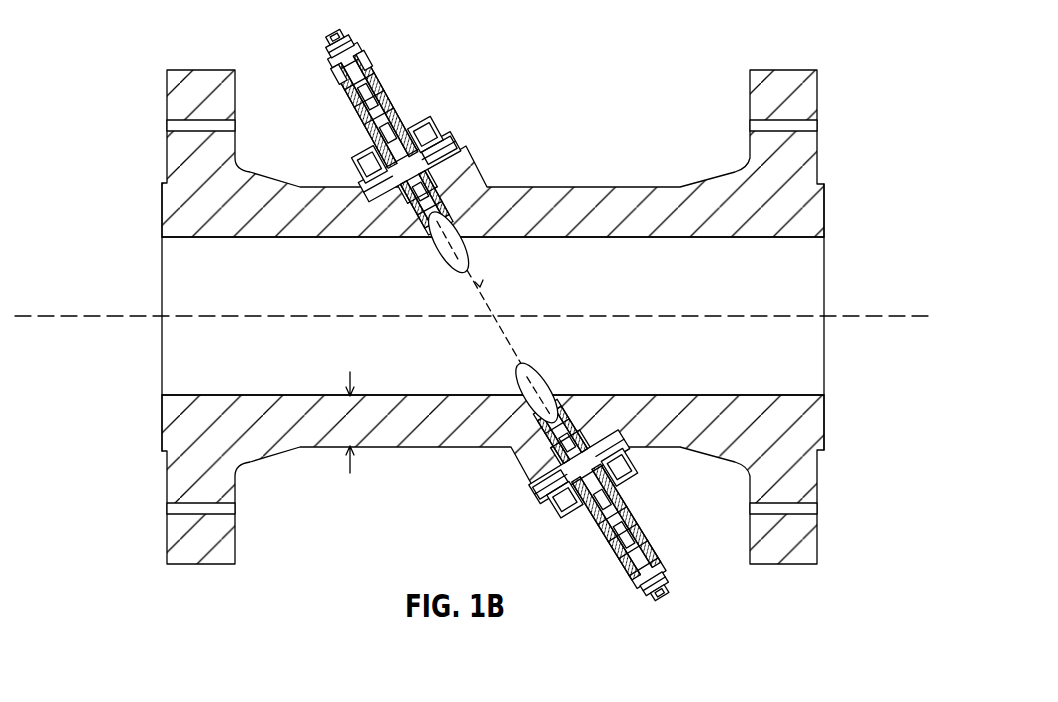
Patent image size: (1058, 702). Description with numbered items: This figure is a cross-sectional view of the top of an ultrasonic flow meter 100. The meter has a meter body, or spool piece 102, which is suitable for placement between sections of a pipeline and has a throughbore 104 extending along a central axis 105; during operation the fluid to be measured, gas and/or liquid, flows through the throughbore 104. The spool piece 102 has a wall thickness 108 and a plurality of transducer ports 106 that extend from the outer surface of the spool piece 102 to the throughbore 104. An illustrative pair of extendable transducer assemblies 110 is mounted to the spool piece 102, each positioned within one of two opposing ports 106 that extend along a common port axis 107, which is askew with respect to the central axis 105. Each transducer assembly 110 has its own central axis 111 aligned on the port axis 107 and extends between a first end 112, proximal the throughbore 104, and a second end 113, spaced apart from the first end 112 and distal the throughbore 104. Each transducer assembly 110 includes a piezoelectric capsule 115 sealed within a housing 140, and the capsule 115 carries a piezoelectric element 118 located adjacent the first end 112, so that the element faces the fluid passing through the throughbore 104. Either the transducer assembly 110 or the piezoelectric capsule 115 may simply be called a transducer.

The ultrasonic flow meter 100 is at (205, 78).
The meter body (spool piece) 102 is at (185, 213).
The throughbore 104 is at (185, 258).
The central axis 105 is at (318, 312).
The transducer port 106 is at (450, 230).
The port axis 107 is at (483, 280).
The wall thickness 108 is at (350, 462).
The transducer assembly 110 is at (387, 97).
The central axis of transducer assembly 111 is at (533, 363).
The first end 112 is at (443, 237).
The second end 113 is at (330, 75).
The piezoelectric capsule 115 is at (363, 127).
The piezoelectric element 118 is at (443, 190).
The housing 140 is at (366, 62).